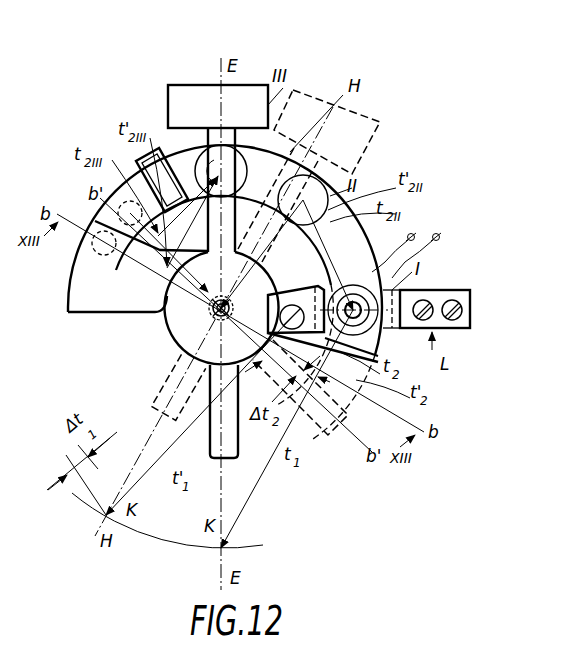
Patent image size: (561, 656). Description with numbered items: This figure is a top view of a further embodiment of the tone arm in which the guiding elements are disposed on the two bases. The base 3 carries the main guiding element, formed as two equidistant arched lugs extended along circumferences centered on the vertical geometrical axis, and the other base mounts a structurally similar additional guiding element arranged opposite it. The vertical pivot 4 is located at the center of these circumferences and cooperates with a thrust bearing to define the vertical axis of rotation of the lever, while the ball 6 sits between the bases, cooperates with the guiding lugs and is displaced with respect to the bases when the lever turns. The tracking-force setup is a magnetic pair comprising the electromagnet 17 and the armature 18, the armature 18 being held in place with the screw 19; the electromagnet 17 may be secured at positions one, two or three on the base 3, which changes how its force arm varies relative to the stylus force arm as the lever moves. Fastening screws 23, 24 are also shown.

The base 3 is at (82, 287).
The vertical pivot 4 is at (170, 324).
The ball 6 is at (96, 243).
The electromagnet 17 is at (372, 322).
The armature 18 is at (362, 345).
The screw 19 is at (292, 305).
The fastening screw 23 is at (452, 320).
The fastening screw 24 is at (432, 302).